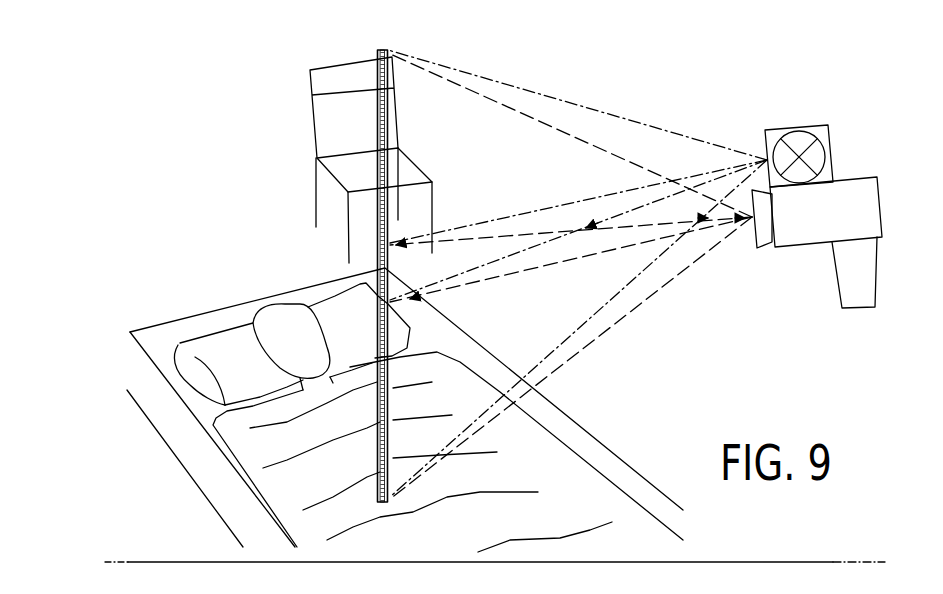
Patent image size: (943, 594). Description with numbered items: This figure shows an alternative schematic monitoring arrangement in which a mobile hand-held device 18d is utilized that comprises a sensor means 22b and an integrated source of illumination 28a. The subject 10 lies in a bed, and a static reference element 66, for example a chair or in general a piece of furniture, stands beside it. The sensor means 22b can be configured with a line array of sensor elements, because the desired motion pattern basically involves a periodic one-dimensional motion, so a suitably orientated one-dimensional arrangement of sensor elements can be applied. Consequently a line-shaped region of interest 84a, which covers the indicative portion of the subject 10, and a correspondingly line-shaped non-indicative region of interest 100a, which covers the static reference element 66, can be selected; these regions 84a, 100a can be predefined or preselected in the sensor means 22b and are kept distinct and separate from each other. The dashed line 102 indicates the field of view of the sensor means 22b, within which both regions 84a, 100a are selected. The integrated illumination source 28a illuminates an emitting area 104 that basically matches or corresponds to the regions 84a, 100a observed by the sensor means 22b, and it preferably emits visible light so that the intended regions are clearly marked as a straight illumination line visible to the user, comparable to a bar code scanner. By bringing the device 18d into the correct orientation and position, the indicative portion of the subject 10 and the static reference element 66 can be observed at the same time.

The subject 10 is at (280, 318).
The static reference element 66 is at (350, 177).
The line-shaped region of interest 84a is at (330, 477).
The line-shaped non-indicative region of interest 100a is at (378, 120).
The field of view 102 is at (649, 161).
The emitting area 104 is at (607, 110).
The mobile hand-held device 18d is at (814, 205).
The sensor means 22b is at (790, 250).
The integrated source of illumination 28a is at (807, 135).